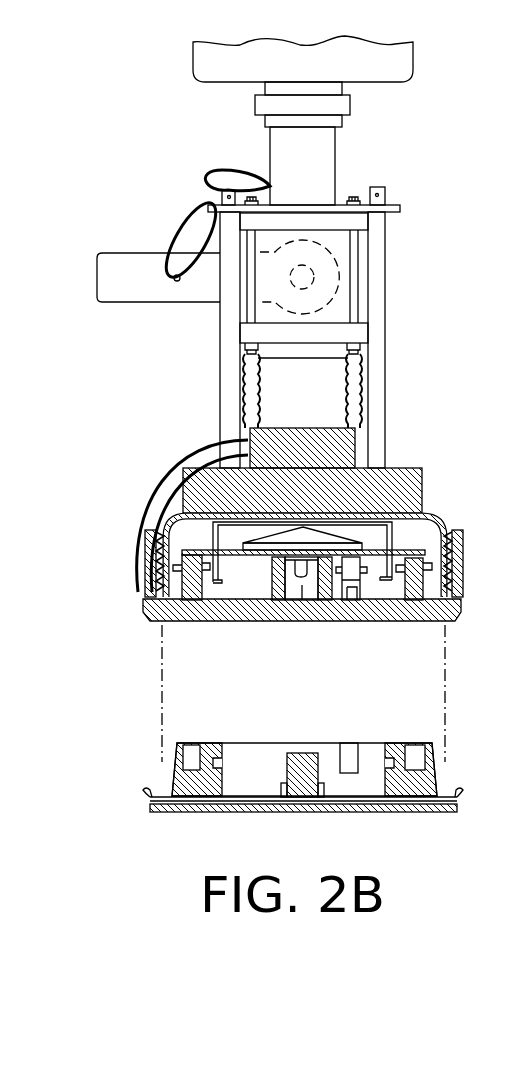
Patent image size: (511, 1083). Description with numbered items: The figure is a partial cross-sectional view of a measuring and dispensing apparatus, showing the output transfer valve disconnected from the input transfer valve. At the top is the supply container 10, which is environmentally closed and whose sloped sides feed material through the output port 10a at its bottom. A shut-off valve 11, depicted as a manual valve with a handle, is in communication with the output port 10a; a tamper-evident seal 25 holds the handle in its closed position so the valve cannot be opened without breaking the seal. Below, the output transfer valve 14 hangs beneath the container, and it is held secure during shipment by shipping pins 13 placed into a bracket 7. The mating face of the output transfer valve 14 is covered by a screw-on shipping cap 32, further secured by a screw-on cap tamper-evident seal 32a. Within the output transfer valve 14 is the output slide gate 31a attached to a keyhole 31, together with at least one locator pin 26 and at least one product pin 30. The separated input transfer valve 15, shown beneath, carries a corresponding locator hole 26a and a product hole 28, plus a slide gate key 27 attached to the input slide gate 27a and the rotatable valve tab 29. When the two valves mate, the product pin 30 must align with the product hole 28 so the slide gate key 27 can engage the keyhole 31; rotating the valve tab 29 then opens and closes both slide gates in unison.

The supply container 10 is at (410, 70).
The output port 10a is at (343, 120).
The bracket 7 is at (398, 208).
The tamper-evident seal 25 is at (208, 210).
The shut-off valve 11 is at (130, 302).
The shipping pins 13 is at (385, 350).
The output slide gate 31a is at (300, 552).
The output transfer valve 14 is at (422, 487).
The screw-on cap tamper-evident seal 32a is at (128, 556).
The screw-on shipping cap 32 is at (263, 623).
The locator pin 26 is at (187, 617).
The keyhole 31 is at (307, 620).
The product pin 30 is at (350, 620).
The locator hole 26a is at (188, 743).
The product hole 28 is at (350, 743).
The slide gate key 27 is at (322, 770).
The input slide gate 27a is at (307, 812).
The input transfer valve 15 is at (188, 812).
The valve tab 29 is at (462, 788).